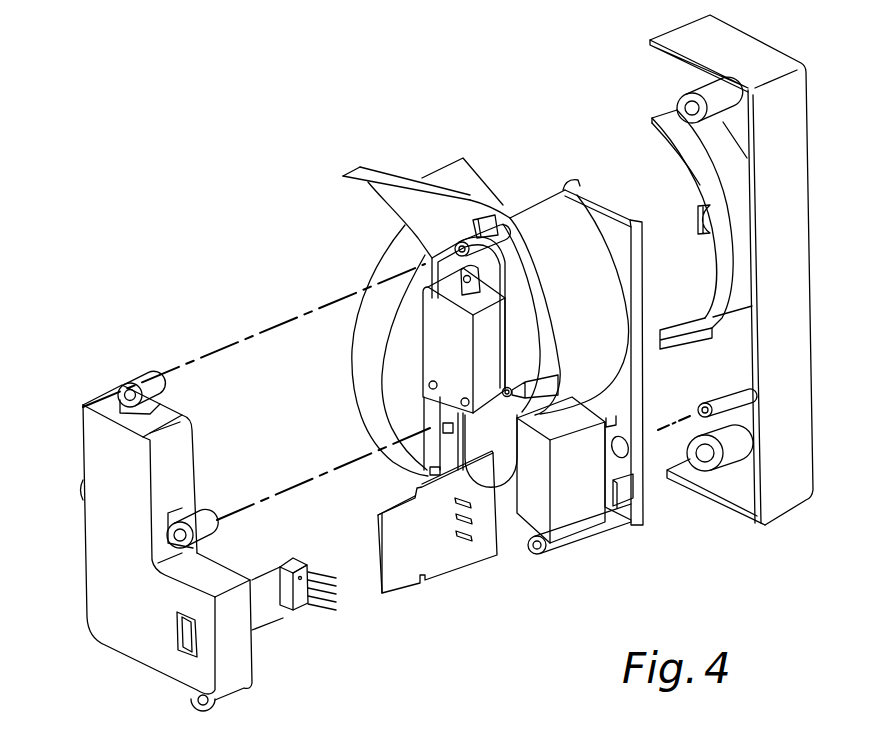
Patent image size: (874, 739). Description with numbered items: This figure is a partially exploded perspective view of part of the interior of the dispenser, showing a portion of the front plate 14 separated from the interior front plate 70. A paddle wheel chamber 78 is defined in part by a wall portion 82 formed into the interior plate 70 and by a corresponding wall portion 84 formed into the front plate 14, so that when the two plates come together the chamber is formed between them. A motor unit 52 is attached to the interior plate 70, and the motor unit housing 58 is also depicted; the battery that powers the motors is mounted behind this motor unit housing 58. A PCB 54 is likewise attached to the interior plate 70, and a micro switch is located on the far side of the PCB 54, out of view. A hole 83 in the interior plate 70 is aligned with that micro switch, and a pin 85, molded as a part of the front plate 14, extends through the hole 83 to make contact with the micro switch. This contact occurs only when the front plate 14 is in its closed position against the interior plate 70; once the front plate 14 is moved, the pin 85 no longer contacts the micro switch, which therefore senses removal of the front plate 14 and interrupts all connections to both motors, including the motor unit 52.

The front plate 14 is at (806, 88).
The motor unit 52 is at (440, 357).
The PCB 54 is at (436, 563).
The motor unit housing 58 is at (103, 568).
The interior front plate 70 is at (648, 527).
The paddle wheel chamber 78 is at (658, 207).
The wall portion 82 is at (577, 233).
The hole 83 is at (616, 470).
The wall portion 84 is at (733, 229).
The pin 85 is at (733, 397).